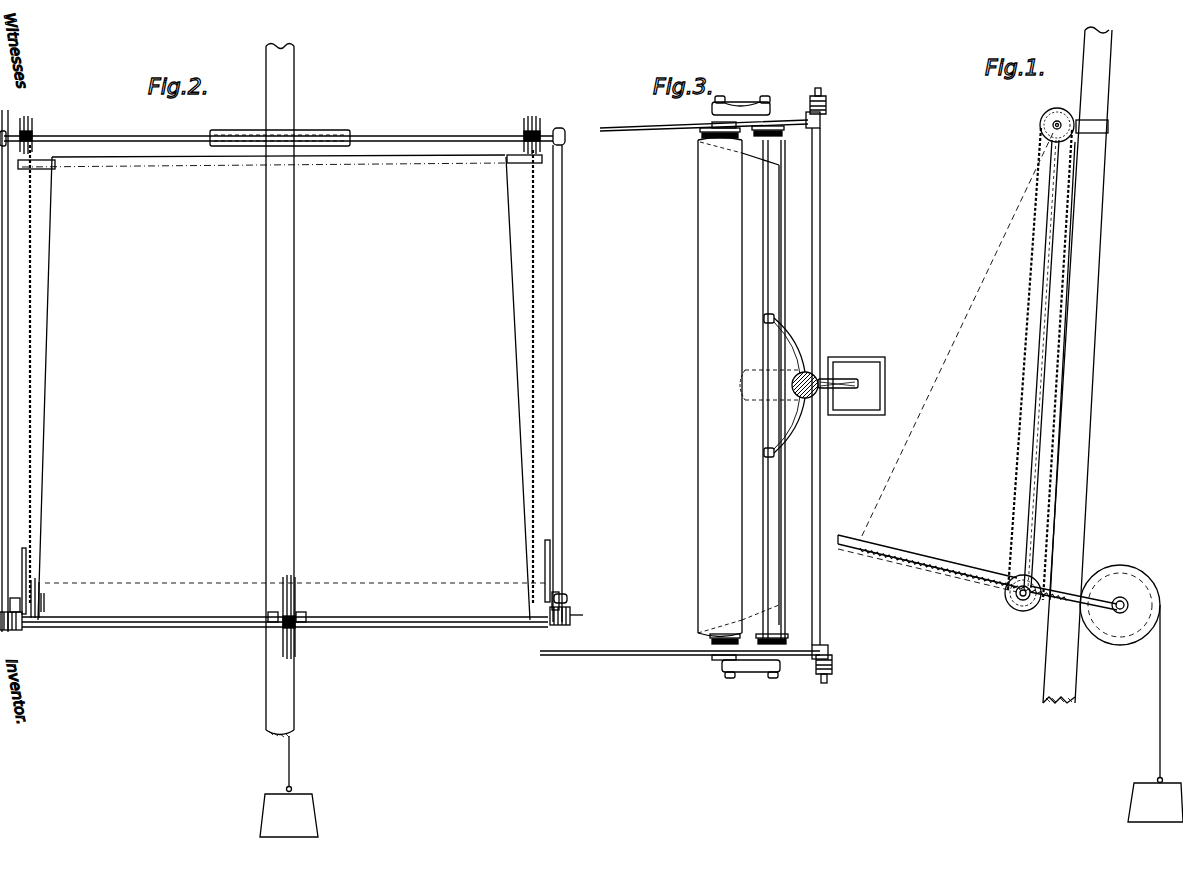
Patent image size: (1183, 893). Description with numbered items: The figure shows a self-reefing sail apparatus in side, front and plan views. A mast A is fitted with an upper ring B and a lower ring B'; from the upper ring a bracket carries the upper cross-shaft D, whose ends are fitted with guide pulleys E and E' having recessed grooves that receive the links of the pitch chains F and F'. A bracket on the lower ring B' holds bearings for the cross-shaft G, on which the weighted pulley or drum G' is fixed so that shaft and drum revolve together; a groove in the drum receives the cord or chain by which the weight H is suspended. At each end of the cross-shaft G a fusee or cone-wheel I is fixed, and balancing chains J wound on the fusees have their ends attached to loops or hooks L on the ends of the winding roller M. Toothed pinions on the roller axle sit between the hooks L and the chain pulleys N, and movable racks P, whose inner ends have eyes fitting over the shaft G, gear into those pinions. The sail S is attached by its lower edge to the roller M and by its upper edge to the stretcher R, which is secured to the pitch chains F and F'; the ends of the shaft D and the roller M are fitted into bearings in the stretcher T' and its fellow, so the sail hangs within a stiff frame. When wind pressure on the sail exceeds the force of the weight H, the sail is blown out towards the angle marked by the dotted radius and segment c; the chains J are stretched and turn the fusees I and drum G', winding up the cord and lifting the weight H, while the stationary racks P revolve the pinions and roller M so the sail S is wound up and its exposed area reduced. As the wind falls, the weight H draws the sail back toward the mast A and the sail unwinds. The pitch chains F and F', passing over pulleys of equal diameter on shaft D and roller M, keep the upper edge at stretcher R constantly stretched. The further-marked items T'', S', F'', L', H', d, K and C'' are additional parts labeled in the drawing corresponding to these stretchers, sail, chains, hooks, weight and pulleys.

In FIG. 2, the mast A is at (280, 391).
In FIG. 1, the mast A is at (1077, 365).
In FIG. 2, the upper mast ring B is at (280, 138).
In FIG. 3, the upper mast ring B is at (760, 390).
In FIG. 1, the upper mast ring B is at (1092, 127).
In FIG. 2, the lower mast ring B' is at (293, 611).
In FIG. 2, the upper cross-shaft D is at (276, 133).
In FIG. 3, the upper cross-shaft D is at (762, 389).
In FIG. 2, the guide pulley E is at (32, 131).
In FIG. 1, the guide pulley E is at (1057, 117).
In FIG. 2, the guide pulley E' is at (532, 125).
In FIG. 3, the guide pulley E' is at (777, 384).
In FIG. 2, the stretcher T' is at (288, 371).
In FIG. 3, the stretcher T' is at (746, 388).
In FIG. 2, the knob T'' is at (560, 125).
In FIG. 2, the stretcher R is at (280, 155).
In FIG. 3, the stretcher R is at (789, 390).
In FIG. 1, the stretcher R is at (1049, 370).
In FIG. 2, the sail S is at (283, 387).
In FIG. 3, the sail S is at (764, 389).
In FIG. 3, the roller S' is at (720, 387).
In FIG. 1, the pitch chain F is at (1039, 364).
In FIG. 2, the pitch chain F' is at (27, 375).
In FIG. 2, the chain F'' is at (539, 377).
In FIG. 2, the cross-shaft G is at (285, 621).
In FIG. 3, the cross-shaft G is at (824, 386).
In FIG. 2, the weighted pulley or drum G' is at (289, 609).
In FIG. 2, the movable rack P is at (290, 569).
In FIG. 2, the chain pulley N is at (37, 593).
In FIG. 3, the chain pulley N is at (715, 388).
In FIG. 2, the loop or hook L is at (296, 595).
In FIG. 3, the block L' is at (721, 390).
In FIG. 2, the fusee or cone-wheel I is at (291, 626).
In FIG. 3, the fusee or cone-wheel I is at (826, 382).
In FIG. 2, the weight H is at (289, 786).
In FIG. 3, the weight H is at (856, 386).
In FIG. 1, the weight H' is at (1155, 713).
In FIG. 3, the balancing chain J is at (684, 385).
In FIG. 1, the balancing chain J is at (1073, 595).
In FIG. 3, the dotted radius and segment c is at (784, 385).
In FIG. 1, the dotted radius and segment c is at (956, 336).
In FIG. 3, the handle d is at (838, 363).
In FIG. 1, the rack bar K is at (952, 568).
In FIG. 1, the winding roller M is at (1017, 599).
In FIG. 1, the large pulley C'' is at (1120, 605).